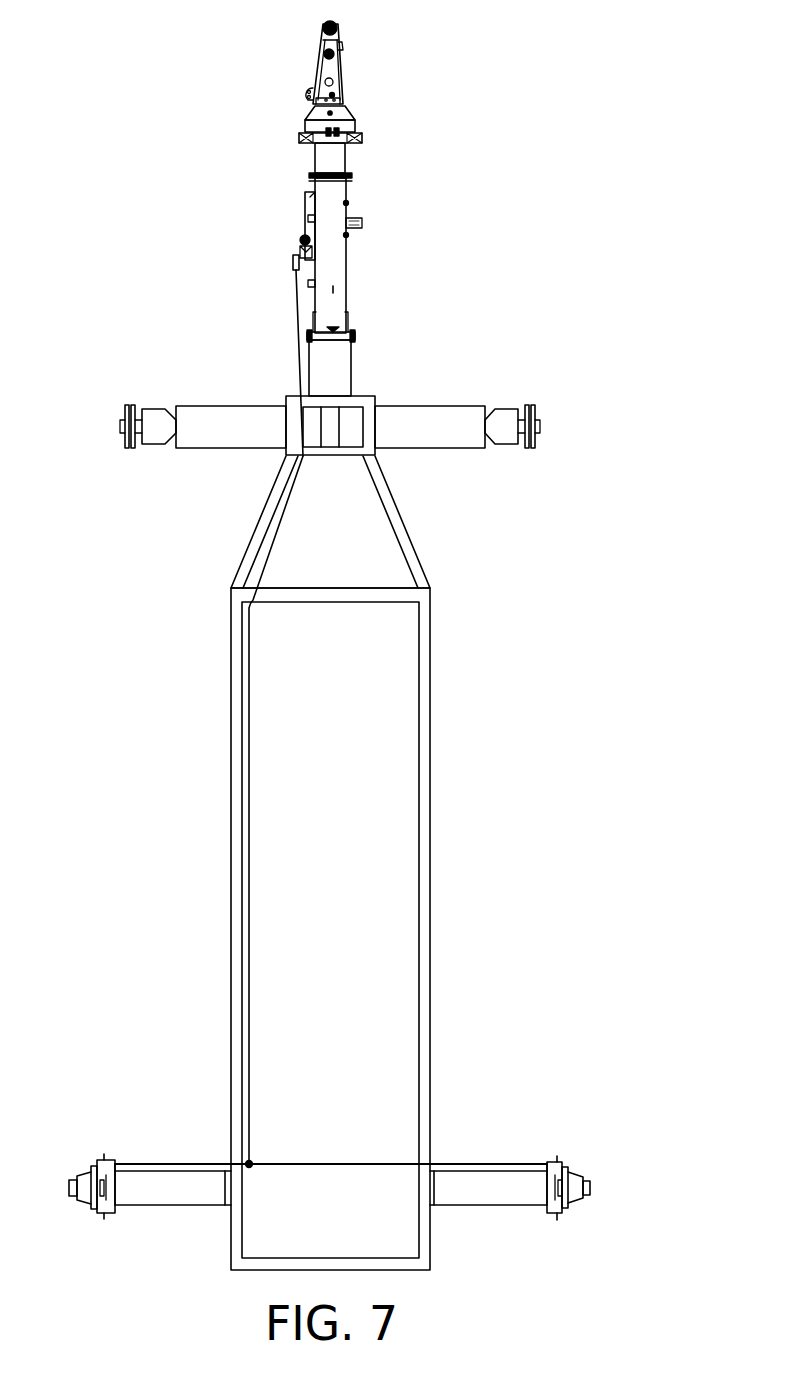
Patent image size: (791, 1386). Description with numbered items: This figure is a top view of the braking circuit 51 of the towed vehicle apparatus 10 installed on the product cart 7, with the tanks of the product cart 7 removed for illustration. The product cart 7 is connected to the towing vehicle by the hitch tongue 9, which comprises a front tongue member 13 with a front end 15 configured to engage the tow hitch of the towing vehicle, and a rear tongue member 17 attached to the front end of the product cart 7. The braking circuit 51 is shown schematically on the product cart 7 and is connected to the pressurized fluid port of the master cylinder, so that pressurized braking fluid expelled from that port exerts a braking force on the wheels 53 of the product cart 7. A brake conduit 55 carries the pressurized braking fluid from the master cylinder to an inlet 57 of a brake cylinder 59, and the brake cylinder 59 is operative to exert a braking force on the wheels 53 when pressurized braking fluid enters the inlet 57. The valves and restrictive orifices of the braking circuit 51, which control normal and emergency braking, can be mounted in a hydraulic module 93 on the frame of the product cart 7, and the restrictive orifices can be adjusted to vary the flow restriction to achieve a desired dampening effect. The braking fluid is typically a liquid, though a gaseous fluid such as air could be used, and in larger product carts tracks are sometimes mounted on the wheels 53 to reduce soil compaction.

The towed vehicle apparatus 10 is at (238, 173).
The front end 15 is at (340, 28).
The front tongue member 13 is at (344, 68).
The hitch tongue 9 is at (348, 210).
The rear tongue member 17 is at (348, 275).
The braking circuit 51 is at (305, 200).
The hydraulic module 93 is at (292, 262).
The product cart 7 is at (432, 857).
The brake conduit 55 is at (250, 797).
The inlet 57 is at (547, 1160).
The brake cylinder 59 is at (559, 1158).
The wheels 53 is at (577, 1172).